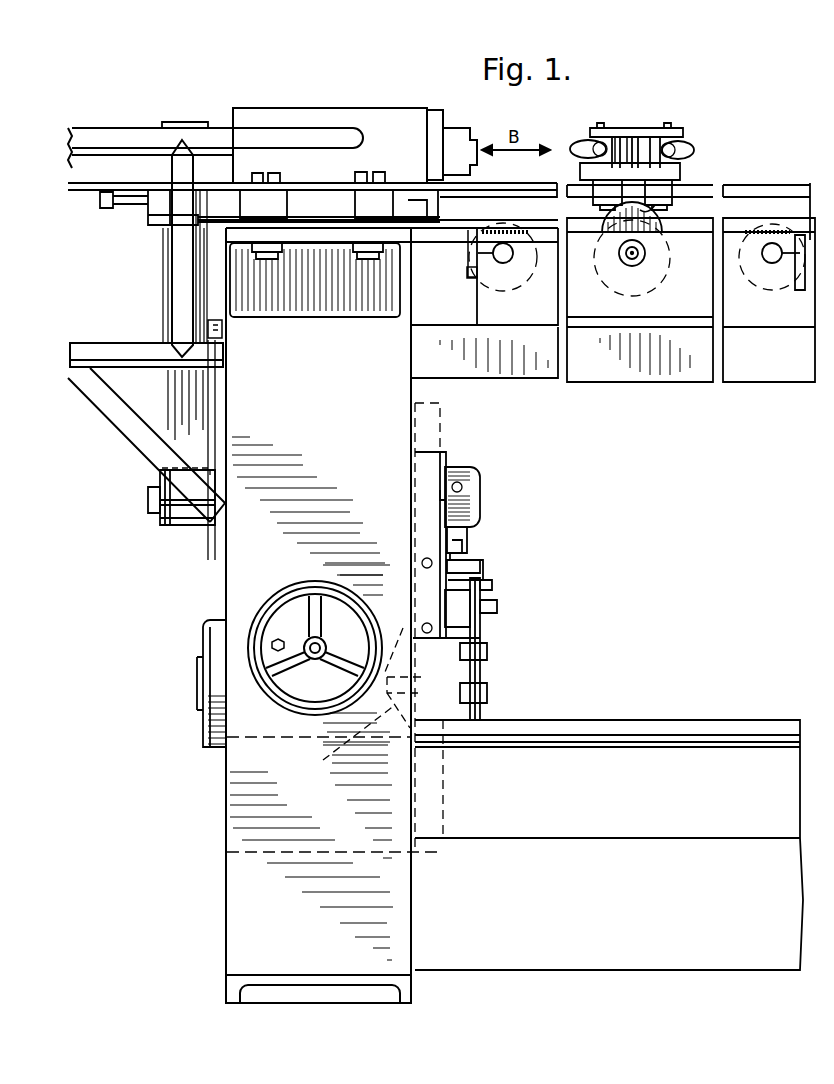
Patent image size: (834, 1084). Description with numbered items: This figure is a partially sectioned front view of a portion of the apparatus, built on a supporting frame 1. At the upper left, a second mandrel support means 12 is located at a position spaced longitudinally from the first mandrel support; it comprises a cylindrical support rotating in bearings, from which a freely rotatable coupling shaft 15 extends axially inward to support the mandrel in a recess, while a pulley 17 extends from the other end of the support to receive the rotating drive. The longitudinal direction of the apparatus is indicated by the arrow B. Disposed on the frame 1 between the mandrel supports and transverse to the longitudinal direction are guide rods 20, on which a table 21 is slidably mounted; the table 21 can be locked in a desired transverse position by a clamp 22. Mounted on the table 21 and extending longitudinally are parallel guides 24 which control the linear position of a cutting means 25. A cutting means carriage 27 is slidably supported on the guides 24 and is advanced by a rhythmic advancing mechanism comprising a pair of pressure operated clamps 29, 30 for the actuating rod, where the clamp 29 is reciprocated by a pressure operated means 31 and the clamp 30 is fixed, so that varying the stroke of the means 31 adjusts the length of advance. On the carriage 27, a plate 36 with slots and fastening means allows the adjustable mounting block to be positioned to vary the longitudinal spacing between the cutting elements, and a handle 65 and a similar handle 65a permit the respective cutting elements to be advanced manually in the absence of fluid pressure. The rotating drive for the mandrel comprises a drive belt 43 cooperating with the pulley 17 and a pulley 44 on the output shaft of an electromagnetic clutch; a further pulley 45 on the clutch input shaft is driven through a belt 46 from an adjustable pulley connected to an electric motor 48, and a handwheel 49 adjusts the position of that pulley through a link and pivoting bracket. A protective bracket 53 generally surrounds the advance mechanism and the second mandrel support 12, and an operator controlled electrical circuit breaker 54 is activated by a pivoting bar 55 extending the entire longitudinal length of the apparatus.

The supporting frame 1 is at (242, 885).
The second mandrel support means 12 is at (407, 115).
The coupling shaft 15 is at (455, 137).
The pulley 17 is at (182, 120).
The guide rods 20 is at (503, 265).
The table 21 is at (695, 240).
The clamp 22 is at (472, 277).
The parallel guides 24 is at (787, 189).
The cutting means 25 is at (664, 116).
The cutting means carriage 27 is at (663, 202).
The pressure operated clamp 29 is at (277, 197).
The pressure operated clamp 30 is at (378, 197).
The pressure operated means 31 is at (155, 207).
The plate 36 is at (622, 130).
The drive belt 43 is at (177, 393).
The pulley 44 is at (150, 503).
The pulley 45 is at (432, 428).
The belt 46 is at (443, 442).
The electric motor 48 is at (202, 633).
The handwheel 49 is at (275, 600).
The protective bracket 53 is at (97, 132).
The electrical circuit breaker 54 is at (478, 498).
The pivoting bar 55 is at (618, 727).
The handle 65 is at (575, 152).
The handle 65a is at (690, 150).